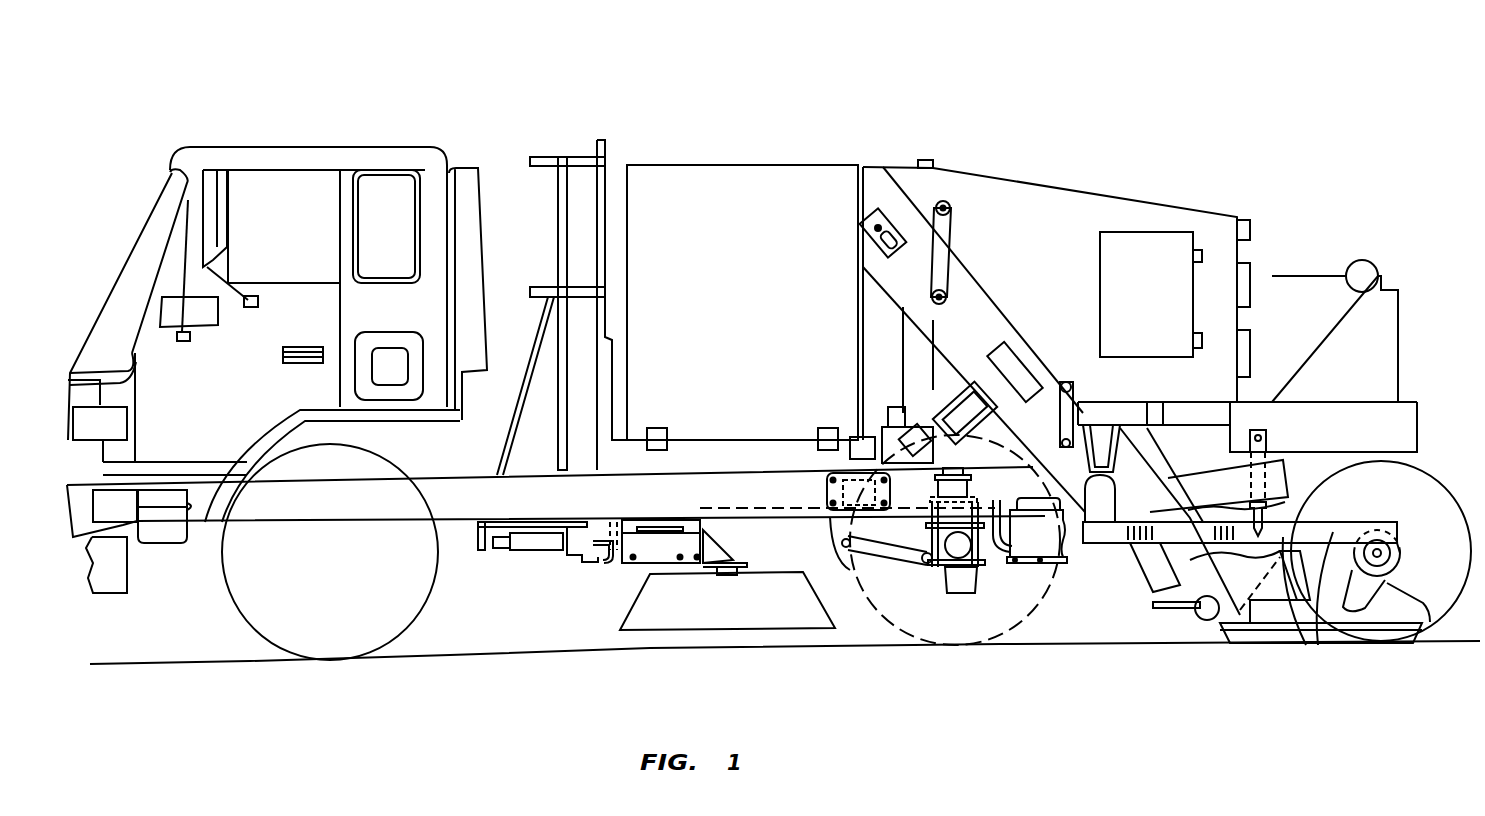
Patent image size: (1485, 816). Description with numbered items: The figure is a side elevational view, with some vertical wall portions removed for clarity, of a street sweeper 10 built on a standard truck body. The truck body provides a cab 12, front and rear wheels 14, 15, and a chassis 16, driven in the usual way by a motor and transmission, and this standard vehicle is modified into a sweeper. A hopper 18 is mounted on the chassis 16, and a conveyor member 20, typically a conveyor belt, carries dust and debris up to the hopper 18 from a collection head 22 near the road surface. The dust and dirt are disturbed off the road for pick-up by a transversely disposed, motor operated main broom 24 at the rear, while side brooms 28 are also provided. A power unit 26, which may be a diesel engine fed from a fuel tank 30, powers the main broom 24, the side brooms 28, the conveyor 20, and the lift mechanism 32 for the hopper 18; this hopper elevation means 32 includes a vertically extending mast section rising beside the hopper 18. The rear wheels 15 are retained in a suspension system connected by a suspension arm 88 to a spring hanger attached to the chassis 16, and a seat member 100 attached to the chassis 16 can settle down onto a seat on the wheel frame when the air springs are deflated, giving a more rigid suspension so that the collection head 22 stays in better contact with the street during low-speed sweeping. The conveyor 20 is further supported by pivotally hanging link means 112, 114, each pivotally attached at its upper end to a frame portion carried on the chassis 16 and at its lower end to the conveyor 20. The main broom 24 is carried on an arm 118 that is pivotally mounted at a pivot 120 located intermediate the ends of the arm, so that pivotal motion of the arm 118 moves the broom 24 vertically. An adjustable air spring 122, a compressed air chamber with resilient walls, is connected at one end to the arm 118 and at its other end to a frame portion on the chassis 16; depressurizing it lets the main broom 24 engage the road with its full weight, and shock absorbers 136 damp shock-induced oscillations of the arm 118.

The street sweeper 10 is at (282, 138).
The cab 12 is at (212, 384).
The wheels 14 is at (338, 594).
The wheels 15 is at (978, 628).
The chassis 16 is at (450, 497).
The hopper 18 is at (746, 293).
The conveyor member 20 is at (983, 304).
The collection head 22 is at (1262, 607).
The main broom 24 is at (1390, 506).
The power unit 26 is at (1343, 355).
The side brooms 28 is at (733, 609).
The fuel tank 30 is at (1163, 305).
The hopper elevation means 32 is at (560, 145).
The suspension arm 88 is at (898, 562).
The seat member 100 is at (967, 489).
The link means 112 is at (946, 202).
The link means 114 is at (1073, 397).
The arm 118 is at (1318, 645).
The pivot 120 is at (1178, 533).
The adjustable air spring 122 is at (1103, 507).
The shock absorbers 136 is at (1267, 450).